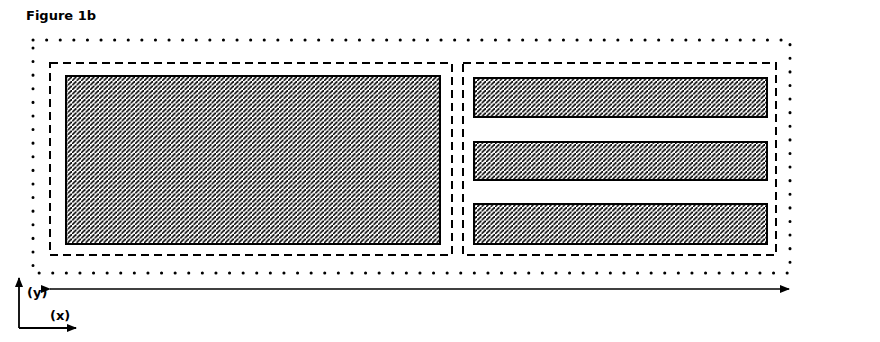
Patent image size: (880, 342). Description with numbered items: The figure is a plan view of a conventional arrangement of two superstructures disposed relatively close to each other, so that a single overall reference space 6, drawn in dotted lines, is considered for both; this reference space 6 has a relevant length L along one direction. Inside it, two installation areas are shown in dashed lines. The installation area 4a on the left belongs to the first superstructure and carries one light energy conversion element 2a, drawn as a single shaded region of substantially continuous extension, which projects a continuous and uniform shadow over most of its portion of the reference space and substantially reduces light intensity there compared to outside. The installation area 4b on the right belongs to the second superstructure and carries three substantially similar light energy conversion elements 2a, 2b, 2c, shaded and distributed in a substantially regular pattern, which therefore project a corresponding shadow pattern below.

The overall reference space 6 is at (411, 150).
The installation area 4a is at (251, 153).
The installation area 4b is at (619, 153).
The light energy conversion element 2a is at (416, 154).
The light energy conversion element 2b is at (620, 153).
The light energy conversion element 2c is at (620, 217).
The length L is at (419, 285).